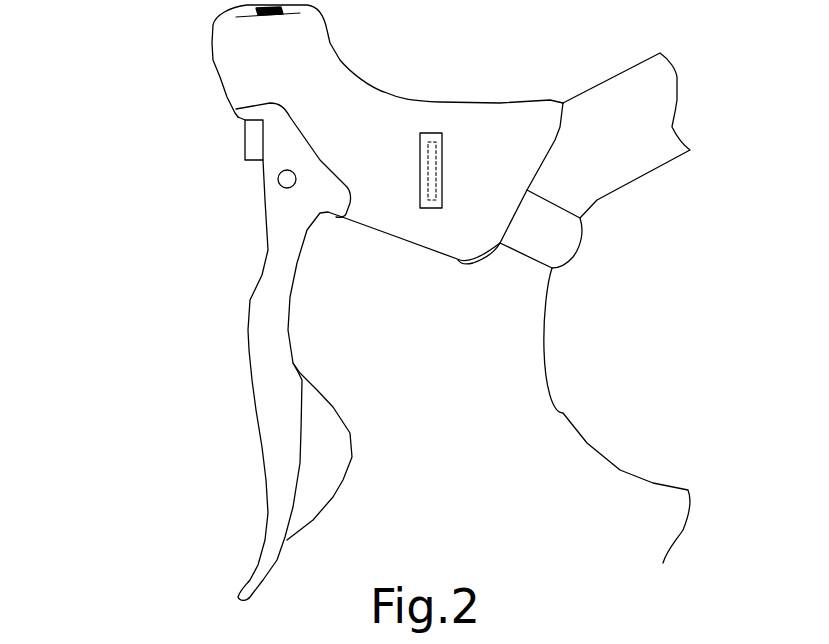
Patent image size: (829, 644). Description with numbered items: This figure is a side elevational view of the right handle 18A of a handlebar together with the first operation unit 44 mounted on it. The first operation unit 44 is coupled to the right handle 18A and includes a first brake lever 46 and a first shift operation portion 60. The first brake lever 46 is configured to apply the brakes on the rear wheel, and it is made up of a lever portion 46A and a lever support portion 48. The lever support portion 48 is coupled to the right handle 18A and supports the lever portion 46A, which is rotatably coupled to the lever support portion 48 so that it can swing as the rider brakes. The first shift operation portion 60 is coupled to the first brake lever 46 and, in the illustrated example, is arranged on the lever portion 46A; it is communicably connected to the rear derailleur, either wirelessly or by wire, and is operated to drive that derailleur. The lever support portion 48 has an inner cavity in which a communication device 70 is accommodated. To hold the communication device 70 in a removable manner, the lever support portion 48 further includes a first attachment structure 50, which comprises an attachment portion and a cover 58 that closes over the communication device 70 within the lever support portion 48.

The first operation unit 44 is at (115, 57).
The right handle 18A is at (632, 65).
The first attachment structure 50 is at (457, 123).
The first brake lever 46 is at (157, 143).
The lever support portion 48 is at (228, 88).
The lever portion 46A is at (263, 249).
The cover 58 is at (442, 173).
The communication device 70 is at (422, 157).
The first shift operation portion 60 is at (333, 398).